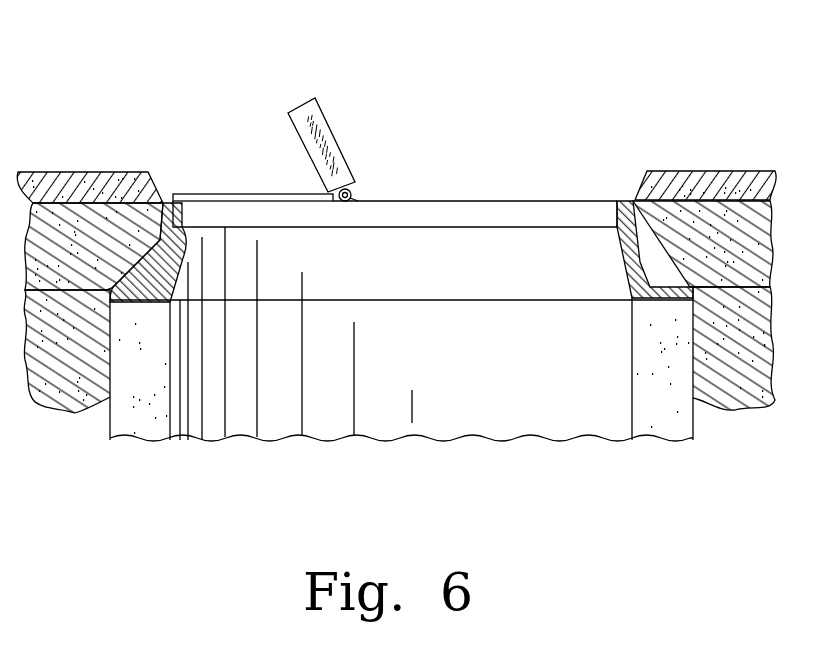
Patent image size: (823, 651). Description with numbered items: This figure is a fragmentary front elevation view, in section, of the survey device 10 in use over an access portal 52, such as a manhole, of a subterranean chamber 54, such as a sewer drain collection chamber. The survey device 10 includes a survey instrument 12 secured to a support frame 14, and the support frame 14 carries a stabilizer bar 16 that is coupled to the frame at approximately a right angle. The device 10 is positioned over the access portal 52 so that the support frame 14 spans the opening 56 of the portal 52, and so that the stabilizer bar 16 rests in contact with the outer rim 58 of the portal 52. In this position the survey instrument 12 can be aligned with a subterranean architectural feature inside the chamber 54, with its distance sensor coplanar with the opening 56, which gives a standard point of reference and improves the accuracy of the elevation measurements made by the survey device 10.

The survey device 10 is at (270, 117).
The survey instrument 12 is at (328, 100).
The support frame 14 is at (365, 192).
The stabilizer bar 16 is at (227, 195).
The access portal 52 is at (453, 173).
The subterranean chamber 54 is at (537, 412).
The opening 56 is at (500, 197).
The outer rim 58 is at (187, 185).